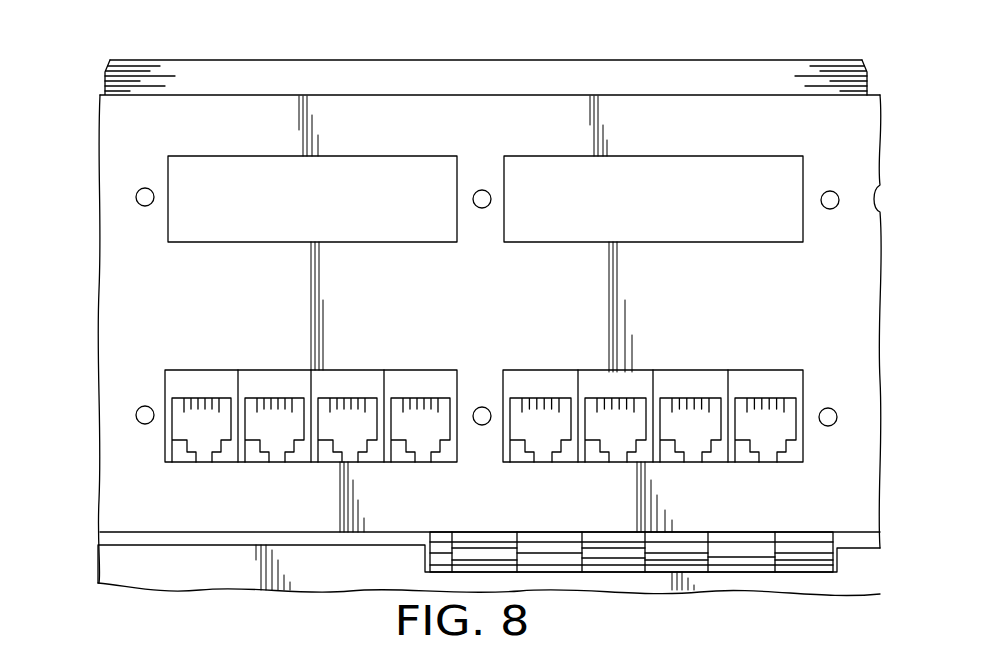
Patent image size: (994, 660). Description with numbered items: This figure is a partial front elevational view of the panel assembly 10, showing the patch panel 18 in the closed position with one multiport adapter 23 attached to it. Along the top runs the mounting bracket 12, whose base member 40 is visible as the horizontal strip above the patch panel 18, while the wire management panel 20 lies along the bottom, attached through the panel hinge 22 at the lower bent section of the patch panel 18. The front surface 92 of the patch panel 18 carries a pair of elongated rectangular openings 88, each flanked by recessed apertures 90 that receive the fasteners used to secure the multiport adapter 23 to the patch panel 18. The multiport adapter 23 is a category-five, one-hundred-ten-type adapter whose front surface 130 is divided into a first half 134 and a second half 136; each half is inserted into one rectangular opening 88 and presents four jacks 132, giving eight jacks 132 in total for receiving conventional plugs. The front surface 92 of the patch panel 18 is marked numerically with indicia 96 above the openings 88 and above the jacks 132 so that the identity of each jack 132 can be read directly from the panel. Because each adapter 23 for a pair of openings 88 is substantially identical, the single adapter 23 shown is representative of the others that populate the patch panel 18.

The panel assembly 10 is at (190, 598).
The mounting bracket 12 is at (330, 59).
The patch panel 18 is at (213, 91).
The wire management panel 20 is at (148, 562).
The panel hinge 22 is at (775, 536).
The multiport adapter 23 is at (802, 365).
The base member 40 is at (700, 75).
The rectangular opening 88 is at (702, 242).
The recessed aperture 90 is at (472, 200).
The front surface 92 is at (176, 283).
The indicia 96 is at (522, 117).
The front surface 130 is at (790, 387).
The jack 132 is at (213, 444).
The first half 134 is at (322, 467).
The second half 136 is at (563, 470).